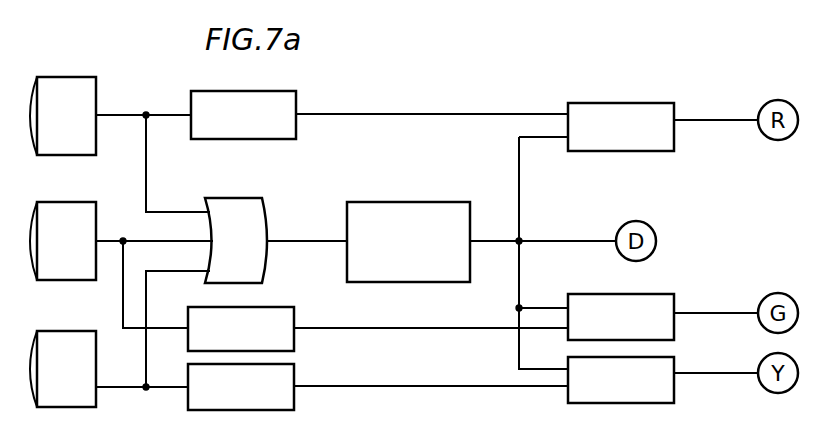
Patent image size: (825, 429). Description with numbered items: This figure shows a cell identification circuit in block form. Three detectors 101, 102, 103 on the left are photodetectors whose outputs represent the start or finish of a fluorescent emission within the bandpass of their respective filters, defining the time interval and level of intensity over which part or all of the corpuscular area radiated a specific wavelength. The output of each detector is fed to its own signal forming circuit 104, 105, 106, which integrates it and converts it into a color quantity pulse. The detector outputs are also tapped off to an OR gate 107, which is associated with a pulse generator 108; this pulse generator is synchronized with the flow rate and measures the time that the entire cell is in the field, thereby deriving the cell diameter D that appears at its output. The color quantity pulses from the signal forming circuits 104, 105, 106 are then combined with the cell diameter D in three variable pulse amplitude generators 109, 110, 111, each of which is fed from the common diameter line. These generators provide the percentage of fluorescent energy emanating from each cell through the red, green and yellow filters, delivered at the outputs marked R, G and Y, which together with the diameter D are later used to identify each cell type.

The detector 101 is at (55, 129).
The detector 102 is at (55, 254).
The detector 103 is at (55, 382).
The signal forming circuit 104 is at (236, 127).
The signal forming circuit 105 is at (234, 341).
The signal forming circuit 106 is at (234, 399).
The OR gate 107 is at (233, 253).
The pulse generator 108 is at (397, 253).
The variable pulse amplitude generator 109 is at (614, 139).
The variable pulse amplitude generator 110 is at (614, 329).
The variable pulse amplitude generator 111 is at (614, 392).